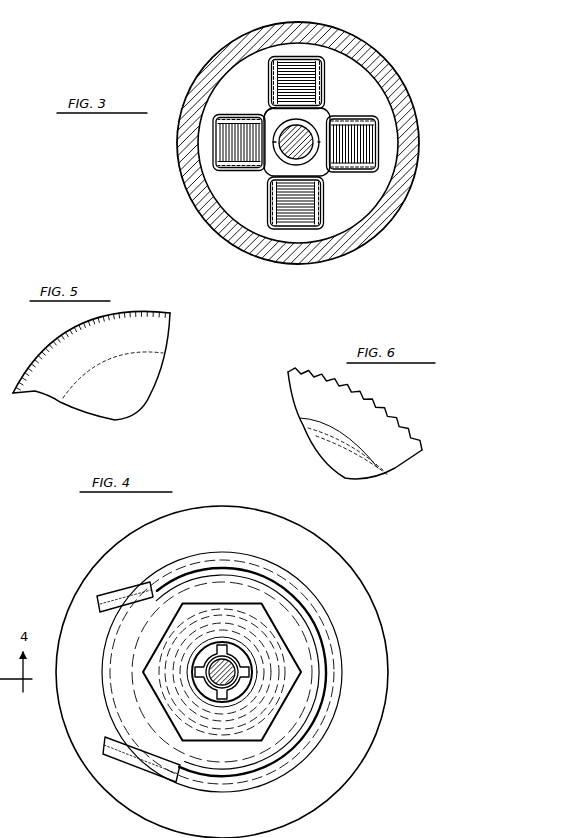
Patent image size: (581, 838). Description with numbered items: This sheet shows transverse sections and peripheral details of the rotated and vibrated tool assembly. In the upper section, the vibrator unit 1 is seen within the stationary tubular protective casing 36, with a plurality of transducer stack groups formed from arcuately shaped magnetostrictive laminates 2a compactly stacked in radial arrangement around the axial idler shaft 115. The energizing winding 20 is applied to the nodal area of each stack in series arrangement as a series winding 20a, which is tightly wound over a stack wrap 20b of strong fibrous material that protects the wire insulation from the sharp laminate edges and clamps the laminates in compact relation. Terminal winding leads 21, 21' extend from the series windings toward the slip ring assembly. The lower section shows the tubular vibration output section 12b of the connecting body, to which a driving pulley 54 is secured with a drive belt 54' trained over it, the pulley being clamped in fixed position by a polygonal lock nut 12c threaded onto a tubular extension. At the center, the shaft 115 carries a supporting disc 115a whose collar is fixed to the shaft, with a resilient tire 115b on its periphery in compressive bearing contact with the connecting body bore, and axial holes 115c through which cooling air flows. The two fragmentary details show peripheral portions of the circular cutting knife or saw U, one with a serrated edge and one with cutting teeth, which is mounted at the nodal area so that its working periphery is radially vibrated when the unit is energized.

In FIG. 3, the stationary tubular protective casing 36 is at (226, 42).
In FIG. 3, the energizing winding 20 is at (331, 73).
In FIG. 3, the vibrator unit 1 is at (232, 145).
In FIG. 3, the magnetostrictive laminates 2a is at (312, 72).
In FIG. 3, the series winding 20a is at (378, 133).
In FIG. 3, the stack wrap 20b is at (355, 120).
In FIG. 3, the winding lead 21 is at (330, 191).
In FIG. 3, the winding lead 21' is at (223, 86).
In FIG. 3, the axial idler shaft 115 is at (201, 228).
In FIG. 4, the axial idler shaft 115 is at (214, 675).
In FIG. 3, the resilient tire 115b is at (120, 2).
In FIG. 4, the resilient tire 115b is at (253, 692).
In FIG. 4, the supporting disc 115a is at (250, 672).
In FIG. 4, the axial holes 115c is at (247, 657).
In FIG. 5, the circular cutting knife or saw U is at (153, 398).
In FIG. 6, the circular cutting knife or saw U is at (305, 438).
In FIG. 4, the circular cutting knife or saw U is at (360, 573).
In FIG. 4, the driving pulley 54 is at (173, 672).
In FIG. 4, the drive belt 54' is at (112, 672).
In FIG. 4, the tubular vibration output section 12b is at (263, 710).
In FIG. 4, the polygonal lock nut 12c is at (240, 712).